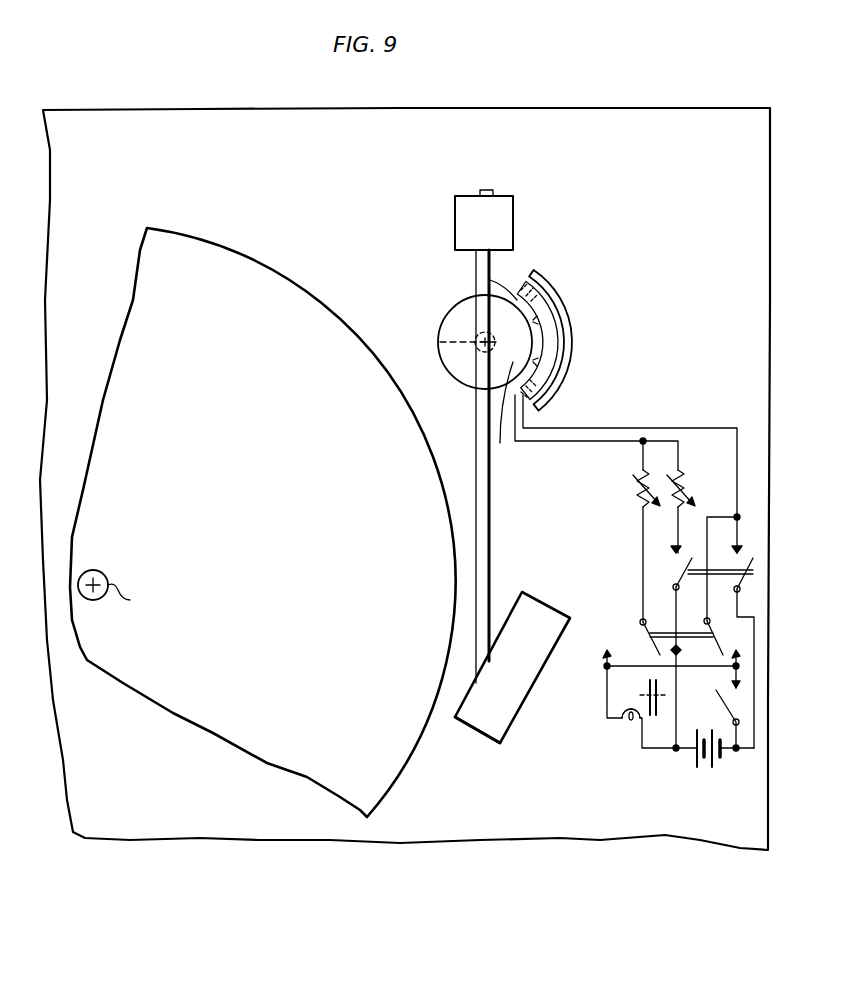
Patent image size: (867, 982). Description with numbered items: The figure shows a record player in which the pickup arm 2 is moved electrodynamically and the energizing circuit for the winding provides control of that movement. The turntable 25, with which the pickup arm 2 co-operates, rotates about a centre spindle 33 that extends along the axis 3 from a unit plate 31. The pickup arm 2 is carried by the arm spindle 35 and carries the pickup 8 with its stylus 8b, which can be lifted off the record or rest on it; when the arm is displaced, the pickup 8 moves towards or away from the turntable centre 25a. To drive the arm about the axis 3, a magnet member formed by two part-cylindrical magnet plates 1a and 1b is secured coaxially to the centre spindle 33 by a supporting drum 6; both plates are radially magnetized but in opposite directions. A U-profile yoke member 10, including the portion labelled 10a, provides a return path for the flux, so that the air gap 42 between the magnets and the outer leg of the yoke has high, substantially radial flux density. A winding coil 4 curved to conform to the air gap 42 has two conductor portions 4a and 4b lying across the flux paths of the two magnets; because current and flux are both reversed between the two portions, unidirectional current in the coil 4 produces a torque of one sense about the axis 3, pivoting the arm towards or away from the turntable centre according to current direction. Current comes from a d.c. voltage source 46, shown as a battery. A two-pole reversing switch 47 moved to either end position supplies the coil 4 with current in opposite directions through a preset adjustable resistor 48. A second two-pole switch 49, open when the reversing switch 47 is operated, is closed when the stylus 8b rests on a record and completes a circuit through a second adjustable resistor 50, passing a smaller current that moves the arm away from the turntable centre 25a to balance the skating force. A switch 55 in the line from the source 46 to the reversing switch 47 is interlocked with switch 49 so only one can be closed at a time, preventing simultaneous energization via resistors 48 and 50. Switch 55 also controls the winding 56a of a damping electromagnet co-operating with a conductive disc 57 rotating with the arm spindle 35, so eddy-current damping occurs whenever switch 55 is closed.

The part-cylindrical magnet plate 1a is at (490, 280).
The part-cylindrical magnet plate 1b is at (502, 421).
The pickup arm 2 is at (491, 528).
The axis 3 is at (479, 351).
The winding coil 4 is at (553, 345).
The conductor portion 4a is at (540, 283).
The conductor portion 4b is at (562, 385).
The supporting drum 6 is at (446, 312).
The pickup 8 is at (528, 670).
The stylus 8b is at (487, 727).
The yoke member 10 is at (564, 304).
The yoke end 10a is at (541, 405).
The turntable 25 is at (303, 307).
The turntable centre 25a is at (105, 573).
The unit plate 31 is at (258, 824).
The centre spindle 33 is at (133, 599).
The arm spindle 35 is at (440, 342).
The air gap 42 is at (520, 276).
The d.c. voltage source 46 is at (703, 769).
The two-pole reversing switch 47 is at (658, 632).
The adjustable resistor 48 is at (640, 490).
The second two-pole switch 49 is at (690, 572).
The second adjustable resistor 50 is at (683, 488).
The switch 55 is at (716, 700).
The winding 56a is at (624, 722).
The disc 57 is at (648, 684).